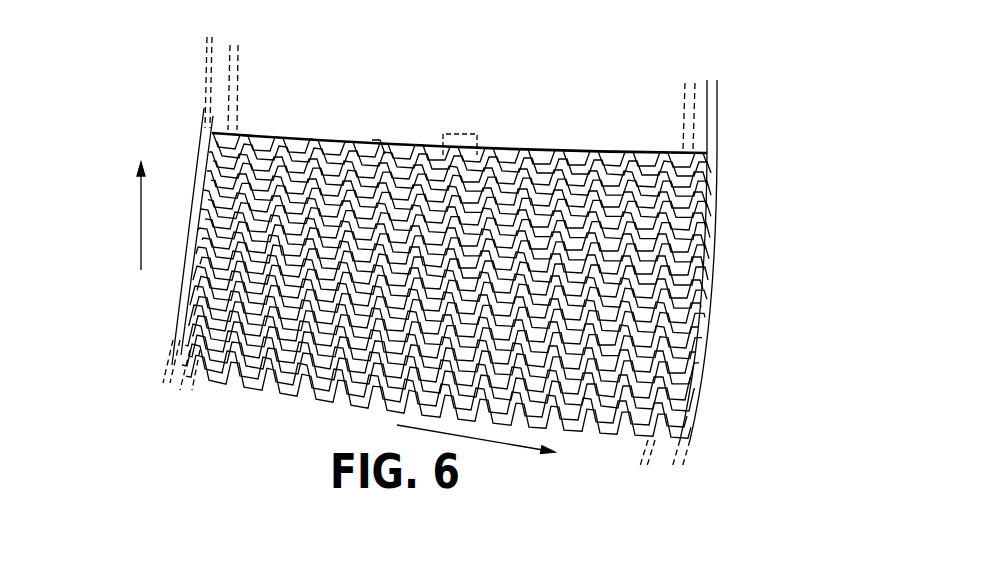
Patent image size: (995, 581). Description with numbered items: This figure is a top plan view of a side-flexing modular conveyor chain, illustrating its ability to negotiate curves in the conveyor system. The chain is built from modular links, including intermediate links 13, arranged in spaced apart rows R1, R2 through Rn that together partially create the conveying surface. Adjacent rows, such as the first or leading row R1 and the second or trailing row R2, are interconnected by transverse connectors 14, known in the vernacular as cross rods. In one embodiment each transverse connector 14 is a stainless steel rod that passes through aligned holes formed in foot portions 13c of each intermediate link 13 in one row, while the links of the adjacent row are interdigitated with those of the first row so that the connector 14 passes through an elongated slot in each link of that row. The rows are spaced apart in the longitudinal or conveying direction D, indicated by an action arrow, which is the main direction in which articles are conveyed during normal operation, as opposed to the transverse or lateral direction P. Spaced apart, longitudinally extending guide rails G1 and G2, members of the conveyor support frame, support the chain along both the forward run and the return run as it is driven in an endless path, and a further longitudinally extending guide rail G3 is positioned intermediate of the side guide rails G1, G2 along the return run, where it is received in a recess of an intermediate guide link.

The first (leading) row R1 is at (703, 163).
The second (trailing) row R2 is at (703, 185).
The row Rn is at (703, 213).
The intermediate link 13 is at (506, 173).
The foot portion 13c is at (383, 142).
The transverse connector 14 is at (615, 157).
The guide rail G1 is at (208, 74).
The guide rail G2 is at (712, 120).
The guide rail G3 is at (465, 132).
The conveying direction D is at (141, 212).
The transverse direction P is at (512, 446).